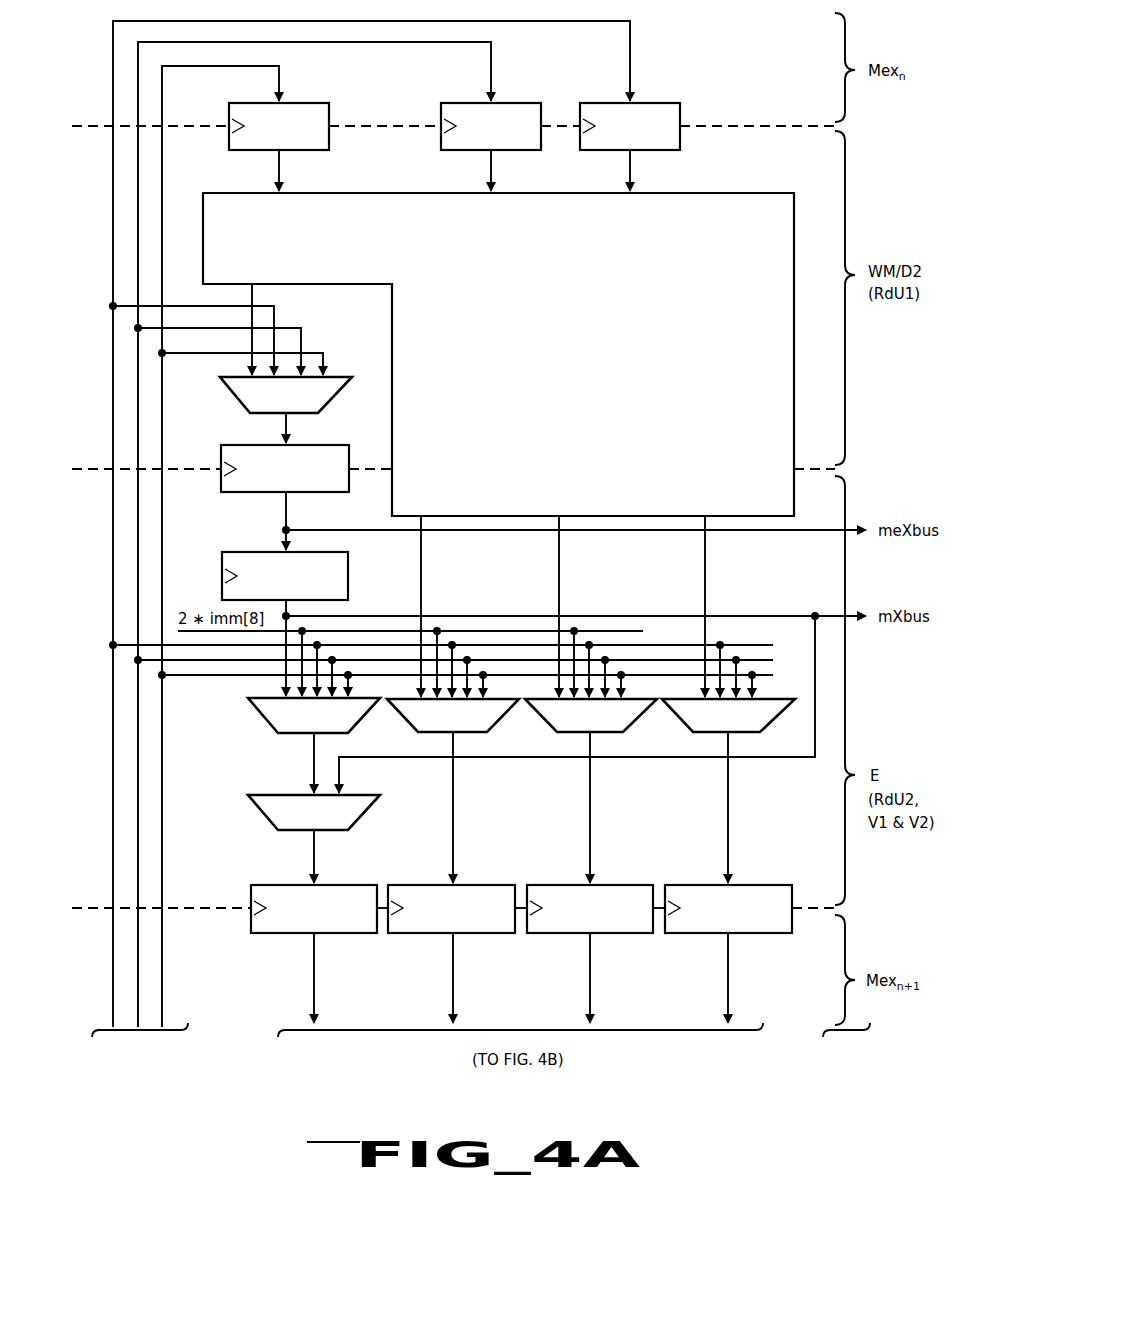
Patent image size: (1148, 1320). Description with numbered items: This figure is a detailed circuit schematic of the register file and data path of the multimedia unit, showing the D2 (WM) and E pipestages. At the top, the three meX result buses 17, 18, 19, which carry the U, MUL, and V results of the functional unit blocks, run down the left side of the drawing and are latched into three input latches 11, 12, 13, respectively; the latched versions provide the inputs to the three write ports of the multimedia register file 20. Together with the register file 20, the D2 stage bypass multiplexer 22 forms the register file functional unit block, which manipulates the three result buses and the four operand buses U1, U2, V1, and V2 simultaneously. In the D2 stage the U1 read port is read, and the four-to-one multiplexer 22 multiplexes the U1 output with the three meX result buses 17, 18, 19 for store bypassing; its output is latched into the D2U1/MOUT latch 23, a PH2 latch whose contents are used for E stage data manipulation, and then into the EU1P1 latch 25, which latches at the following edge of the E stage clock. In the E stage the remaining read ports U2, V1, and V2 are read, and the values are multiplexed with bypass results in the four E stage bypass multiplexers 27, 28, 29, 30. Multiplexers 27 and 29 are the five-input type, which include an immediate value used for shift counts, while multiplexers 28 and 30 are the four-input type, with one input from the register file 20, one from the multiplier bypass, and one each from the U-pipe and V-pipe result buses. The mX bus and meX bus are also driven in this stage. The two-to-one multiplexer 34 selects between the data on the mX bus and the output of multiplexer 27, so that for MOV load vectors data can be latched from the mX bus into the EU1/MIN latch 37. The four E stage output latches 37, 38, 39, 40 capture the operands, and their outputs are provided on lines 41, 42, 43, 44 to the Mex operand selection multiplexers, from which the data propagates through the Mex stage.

The input latch 11 is at (329, 112).
The input latch 12 is at (541, 112).
The input latch 13 is at (680, 112).
The meX result bus 17 is at (113, 806).
The meX result bus 18 is at (138, 778).
The meX result bus 19 is at (162, 830).
The multimedia register file 20 is at (598, 377).
The D2 stage bypass multiplexer 22 is at (255, 395).
The D2U1/MOUT latch 23 is at (349, 470).
The EU1P1 latch 25 is at (222, 558).
The 5:1 bypass multiplexer 27 is at (268, 713).
The 4:1 bypass multiplexer 28 is at (500, 720).
The 5:1 bypass multiplexer 29 is at (640, 718).
The 4:1 bypass multiplexer 30 is at (778, 720).
The 2:1 multiplexer 34 is at (358, 812).
The EU1/MIN latch 37 is at (265, 885).
The E stage output latch 38 is at (475, 885).
The E stage output latch 39 is at (612, 885).
The E stage output latch 40 is at (750, 885).
The output line 41 is at (314, 982).
The output line 42 is at (453, 982).
The output line 43 is at (590, 982).
The output line 44 is at (728, 982).